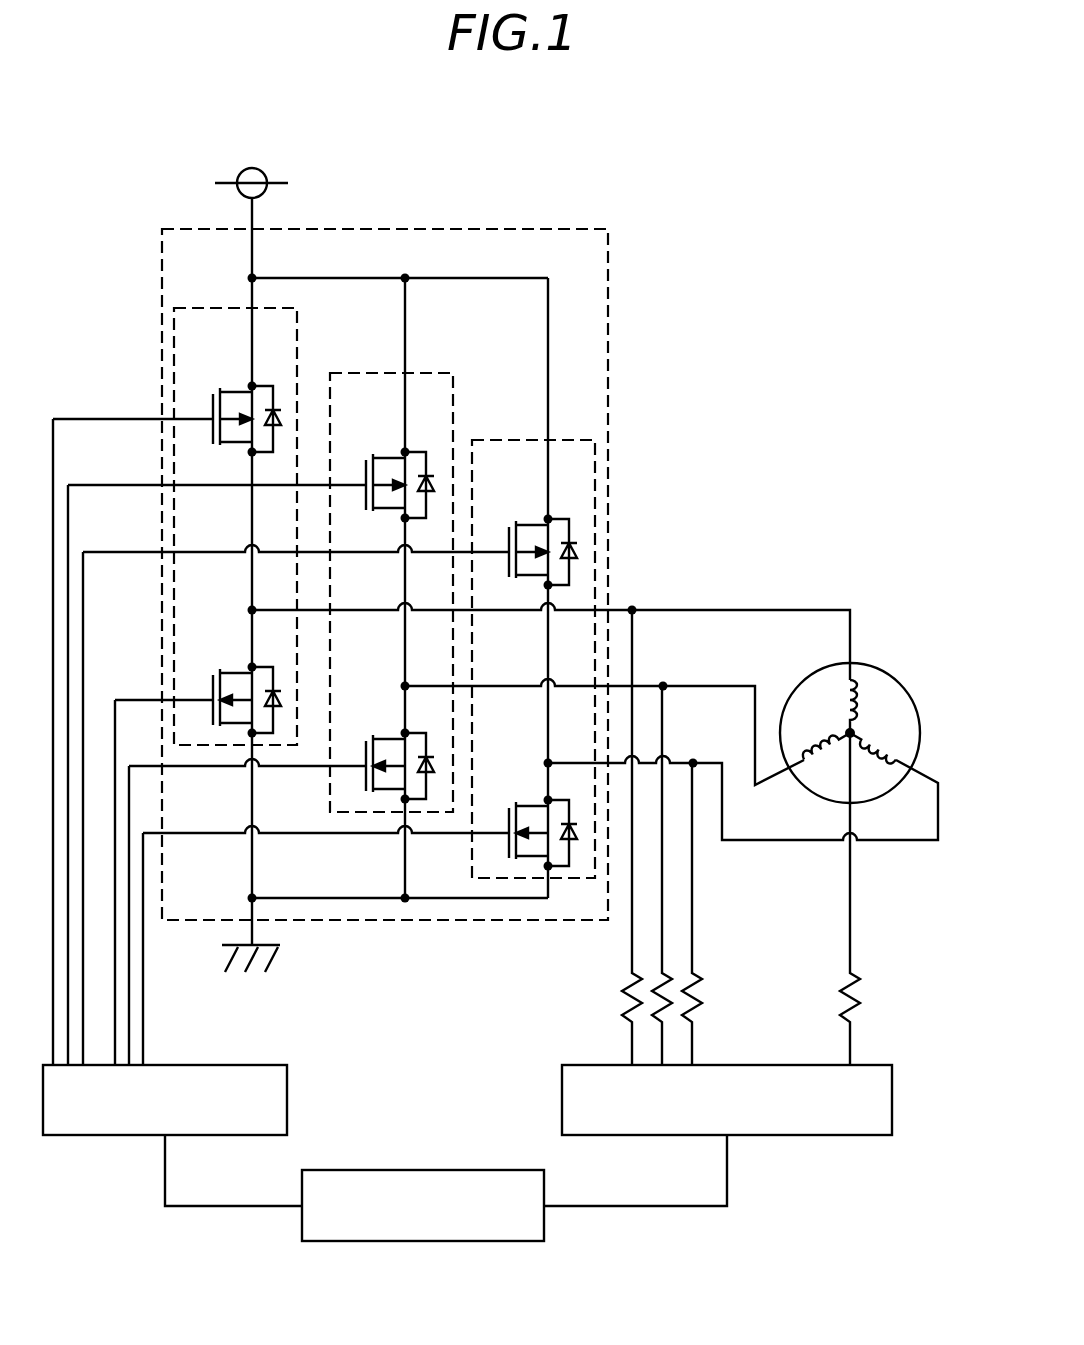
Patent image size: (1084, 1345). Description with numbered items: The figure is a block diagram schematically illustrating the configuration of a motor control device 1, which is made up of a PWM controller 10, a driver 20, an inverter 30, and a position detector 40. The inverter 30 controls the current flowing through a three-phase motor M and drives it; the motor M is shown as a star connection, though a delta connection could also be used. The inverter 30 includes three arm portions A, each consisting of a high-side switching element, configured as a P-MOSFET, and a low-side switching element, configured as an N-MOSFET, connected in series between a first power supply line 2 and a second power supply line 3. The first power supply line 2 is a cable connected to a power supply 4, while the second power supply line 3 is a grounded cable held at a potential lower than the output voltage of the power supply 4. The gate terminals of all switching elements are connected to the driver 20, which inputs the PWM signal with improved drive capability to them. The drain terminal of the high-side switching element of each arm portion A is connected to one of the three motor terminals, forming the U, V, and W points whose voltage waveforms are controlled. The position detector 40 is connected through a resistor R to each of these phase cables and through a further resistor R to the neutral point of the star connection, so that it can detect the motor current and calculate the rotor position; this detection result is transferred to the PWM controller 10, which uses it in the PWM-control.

The motor control device 1 is at (798, 384).
The first power supply line 2 is at (484, 278).
The second power supply line 3 is at (348, 899).
The power supply 4 is at (251, 167).
The PWM controller 10 is at (447, 1170).
The driver 20 is at (220, 1064).
The inverter 30 is at (611, 348).
The position detector 40 is at (860, 1137).
The arm portion A is at (215, 308).
The three-phase motor M is at (893, 676).
The resistor R is at (856, 973).
The W point W is at (702, 598).
The V point V is at (711, 674).
The U point U is at (714, 751).